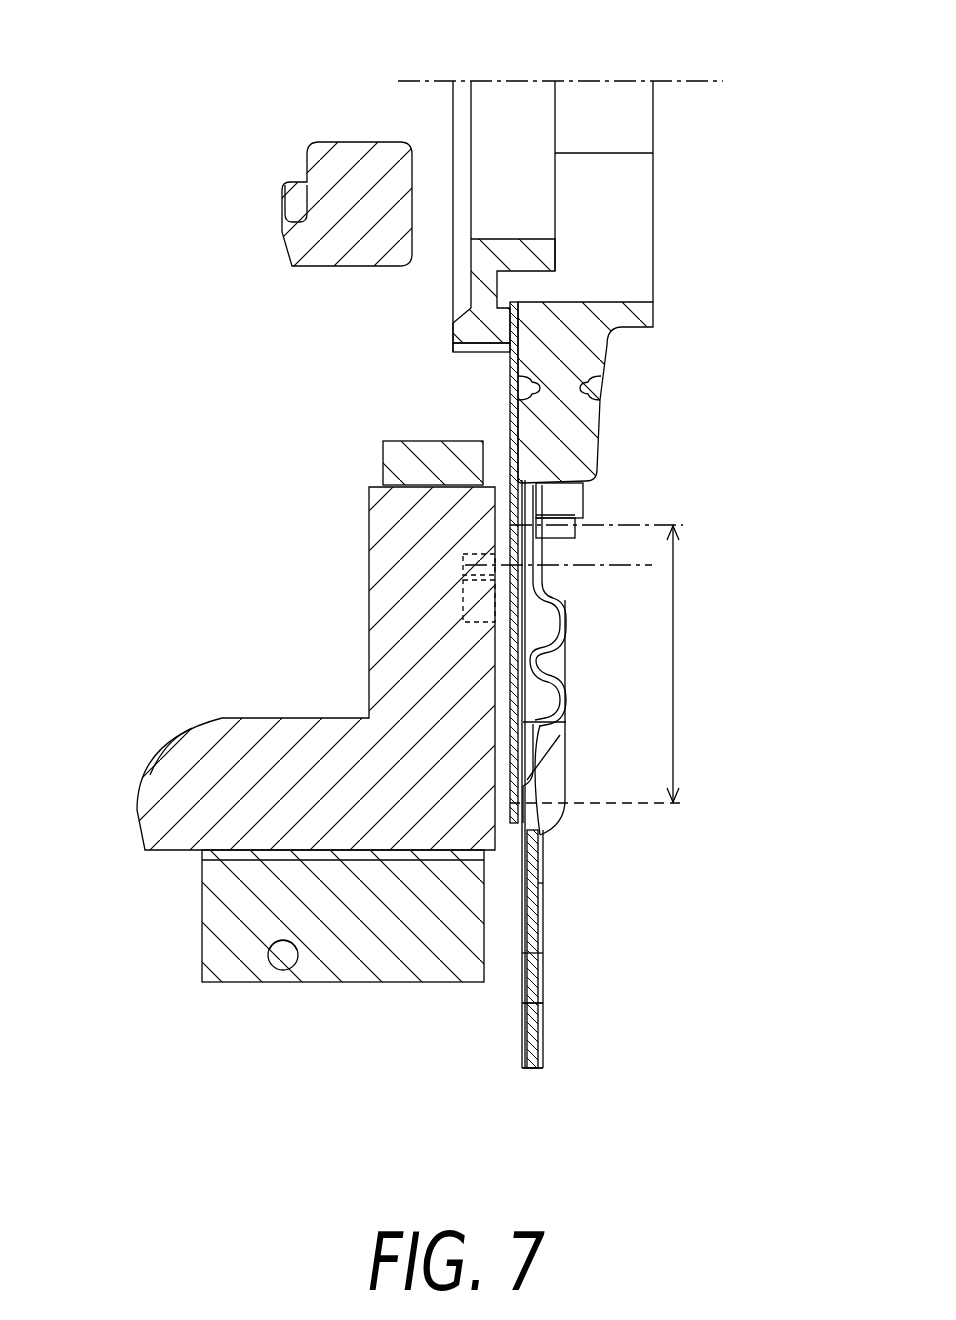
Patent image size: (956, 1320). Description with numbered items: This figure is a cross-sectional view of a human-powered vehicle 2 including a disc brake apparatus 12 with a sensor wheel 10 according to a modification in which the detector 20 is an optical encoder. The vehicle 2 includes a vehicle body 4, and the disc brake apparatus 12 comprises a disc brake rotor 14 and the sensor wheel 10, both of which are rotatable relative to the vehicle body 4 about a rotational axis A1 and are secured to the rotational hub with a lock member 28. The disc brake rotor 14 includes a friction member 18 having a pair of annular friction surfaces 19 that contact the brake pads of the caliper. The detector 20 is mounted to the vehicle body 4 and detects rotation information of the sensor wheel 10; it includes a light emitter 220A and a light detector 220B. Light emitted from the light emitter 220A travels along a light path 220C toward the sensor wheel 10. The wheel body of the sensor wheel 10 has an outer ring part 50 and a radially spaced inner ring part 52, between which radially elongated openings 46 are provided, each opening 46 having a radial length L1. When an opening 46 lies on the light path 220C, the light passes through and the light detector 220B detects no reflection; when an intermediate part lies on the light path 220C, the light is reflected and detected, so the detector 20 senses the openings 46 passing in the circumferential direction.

The rotational axis A1 is at (703, 80).
The human-powered vehicle 2 is at (288, 384).
The vehicle body 4 is at (297, 272).
The sensor wheel 10 is at (498, 394).
The disc brake apparatus 12 is at (614, 890).
The disc brake rotor 14 is at (567, 940).
The friction member 18 is at (547, 1062).
The friction surface 19 is at (545, 1025).
The detector 20 is at (317, 688).
The lock member 28 is at (460, 332).
The opening 46 is at (530, 770).
The outer ring part 50 is at (537, 812).
The inner ring part 52 is at (517, 427).
The light emitter 220A is at (463, 565).
The light detector 220B is at (463, 610).
The light path 220C is at (608, 566).
The radial length L1 is at (677, 683).